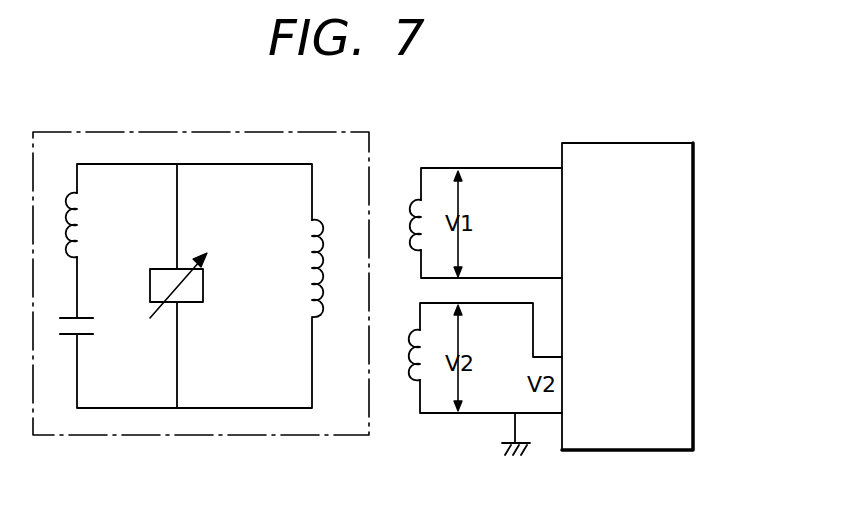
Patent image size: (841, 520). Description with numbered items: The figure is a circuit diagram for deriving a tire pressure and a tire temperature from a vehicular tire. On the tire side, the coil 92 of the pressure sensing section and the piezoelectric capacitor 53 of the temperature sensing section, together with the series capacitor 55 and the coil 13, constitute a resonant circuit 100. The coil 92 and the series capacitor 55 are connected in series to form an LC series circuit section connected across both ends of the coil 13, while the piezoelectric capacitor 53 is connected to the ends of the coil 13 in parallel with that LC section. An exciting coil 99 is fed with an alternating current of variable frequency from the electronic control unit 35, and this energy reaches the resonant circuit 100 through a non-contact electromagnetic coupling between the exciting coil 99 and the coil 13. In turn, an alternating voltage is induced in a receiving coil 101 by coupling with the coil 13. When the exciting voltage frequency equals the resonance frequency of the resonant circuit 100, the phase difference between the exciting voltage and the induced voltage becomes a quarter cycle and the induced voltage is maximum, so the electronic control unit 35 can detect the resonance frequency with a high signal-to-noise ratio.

The resonant circuit 100 is at (284, 131).
The coil 92 is at (78, 237).
The piezoelectric capacitor 53 is at (187, 262).
The series capacitor 55 is at (88, 328).
The coil 13 is at (320, 242).
The exciting coil 99 is at (416, 208).
The receiving coil 101 is at (415, 335).
The ECU 35 is at (660, 148).